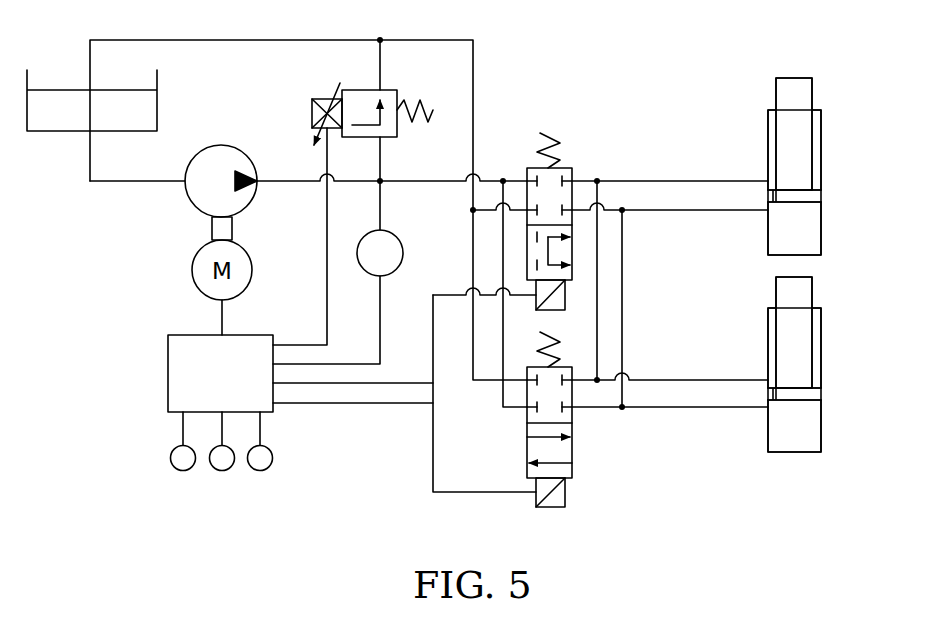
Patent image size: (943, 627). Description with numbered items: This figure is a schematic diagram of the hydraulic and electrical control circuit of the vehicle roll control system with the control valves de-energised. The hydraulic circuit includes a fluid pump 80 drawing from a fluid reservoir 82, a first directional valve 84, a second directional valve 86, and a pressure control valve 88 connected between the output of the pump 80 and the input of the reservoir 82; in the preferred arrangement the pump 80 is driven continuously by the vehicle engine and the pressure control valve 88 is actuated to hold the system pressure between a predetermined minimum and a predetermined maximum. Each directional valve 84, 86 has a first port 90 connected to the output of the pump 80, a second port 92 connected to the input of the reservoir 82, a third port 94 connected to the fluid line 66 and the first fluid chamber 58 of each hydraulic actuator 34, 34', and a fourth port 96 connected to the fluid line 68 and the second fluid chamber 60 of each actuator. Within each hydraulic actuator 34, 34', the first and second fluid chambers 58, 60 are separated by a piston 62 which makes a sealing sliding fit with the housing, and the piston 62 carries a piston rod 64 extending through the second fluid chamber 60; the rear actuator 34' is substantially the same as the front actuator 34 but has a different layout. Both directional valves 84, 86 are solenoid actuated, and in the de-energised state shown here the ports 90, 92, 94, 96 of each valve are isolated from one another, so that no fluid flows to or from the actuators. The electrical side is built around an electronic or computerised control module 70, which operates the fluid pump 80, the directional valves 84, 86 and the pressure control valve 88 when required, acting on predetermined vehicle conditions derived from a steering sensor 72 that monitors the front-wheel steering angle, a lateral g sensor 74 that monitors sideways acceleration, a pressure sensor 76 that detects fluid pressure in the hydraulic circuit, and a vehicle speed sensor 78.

The hydraulic actuator 34 is at (826, 166).
The hydraulic actuator 34' is at (837, 364).
The first fluid chamber 58 is at (815, 240).
The second fluid chamber 60 is at (815, 138).
The piston 62 is at (817, 195).
The piston rod 64 is at (797, 93).
The fluid line 66 is at (730, 212).
The fluid line 68 is at (725, 182).
The control module 70 is at (168, 376).
The steering sensor 72 is at (177, 464).
The lateral g sensor 74 is at (218, 466).
The pressure sensor 76 is at (396, 237).
The vehicle speed sensor 78 is at (265, 464).
The fluid pump 80 is at (188, 193).
The fluid reservoir 82 is at (55, 125).
The first directional valve 84 is at (577, 160).
The second directional valve 86 is at (585, 483).
The pressure control valve 88 is at (387, 88).
The first port 90 is at (527, 181).
The second port 92 is at (527, 210).
The third port 94 is at (572, 210).
The fourth port 96 is at (572, 181).